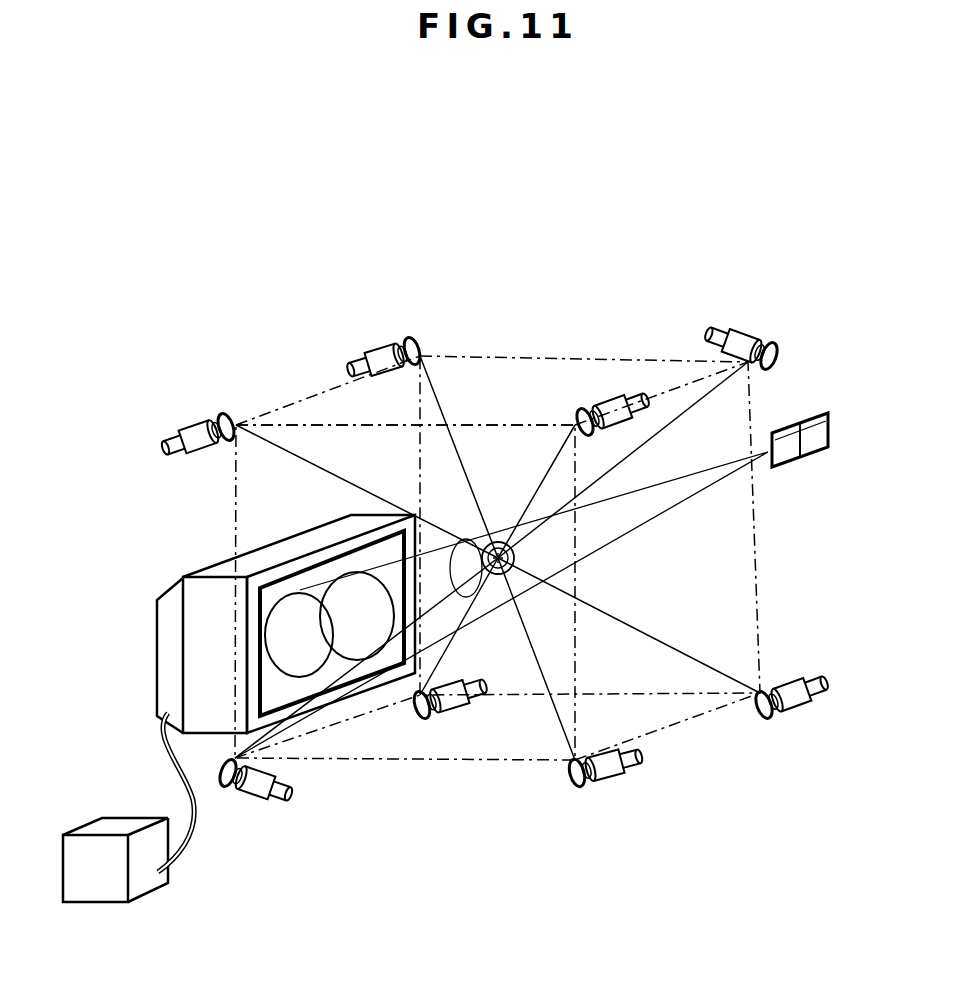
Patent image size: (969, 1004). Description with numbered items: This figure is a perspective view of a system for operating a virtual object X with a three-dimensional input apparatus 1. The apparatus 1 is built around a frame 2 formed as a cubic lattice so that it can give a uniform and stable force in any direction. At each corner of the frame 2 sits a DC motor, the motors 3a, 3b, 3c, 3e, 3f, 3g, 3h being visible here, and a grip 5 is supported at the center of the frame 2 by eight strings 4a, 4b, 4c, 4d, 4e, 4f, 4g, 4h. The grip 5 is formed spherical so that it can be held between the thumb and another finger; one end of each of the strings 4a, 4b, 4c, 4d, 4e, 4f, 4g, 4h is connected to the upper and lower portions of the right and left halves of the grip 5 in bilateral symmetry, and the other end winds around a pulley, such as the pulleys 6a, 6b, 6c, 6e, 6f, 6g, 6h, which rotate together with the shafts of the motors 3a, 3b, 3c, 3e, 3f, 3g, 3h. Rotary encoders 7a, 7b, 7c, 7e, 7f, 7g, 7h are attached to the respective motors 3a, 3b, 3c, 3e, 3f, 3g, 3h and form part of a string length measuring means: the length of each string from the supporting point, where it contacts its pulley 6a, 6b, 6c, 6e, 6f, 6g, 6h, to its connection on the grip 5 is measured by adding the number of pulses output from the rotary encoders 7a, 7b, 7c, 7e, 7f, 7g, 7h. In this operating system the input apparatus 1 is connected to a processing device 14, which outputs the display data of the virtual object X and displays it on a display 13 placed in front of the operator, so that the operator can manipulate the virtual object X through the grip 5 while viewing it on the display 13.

The three-dimensional input apparatus 1 is at (573, 200).
The frame 2 is at (796, 526).
The motor 3a is at (205, 420).
The motor 3b is at (395, 347).
The motor 3c is at (742, 340).
The motor 3e is at (252, 797).
The motor 3f is at (466, 708).
The motor 3g is at (797, 712).
The motor 3h is at (605, 779).
The string 4a is at (318, 466).
The string 4b is at (443, 400).
The string 4c is at (643, 447).
The string 4d is at (573, 428).
The string 4e is at (356, 680).
The string 4f is at (492, 578).
The string 4g is at (735, 665).
The string 4h is at (562, 716).
The grip 5 is at (499, 541).
The pulley 6a is at (225, 412).
The pulley 6b is at (415, 338).
The pulley 6c is at (782, 358).
The pulley 6e is at (228, 788).
The pulley 6f is at (418, 717).
The pulley 6g is at (768, 719).
The pulley 6h is at (577, 790).
The rotary encoder 7a is at (182, 432).
The rotary encoder 7b is at (368, 362).
The rotary encoder 7c is at (722, 336).
The rotary encoder 7e is at (285, 794).
The rotary encoder 7f is at (464, 688).
The rotary encoder 7g is at (828, 691).
The rotary encoder 7h is at (631, 771).
The display 13 is at (203, 592).
The processing device 14 is at (126, 797).
The virtual object X is at (463, 552).